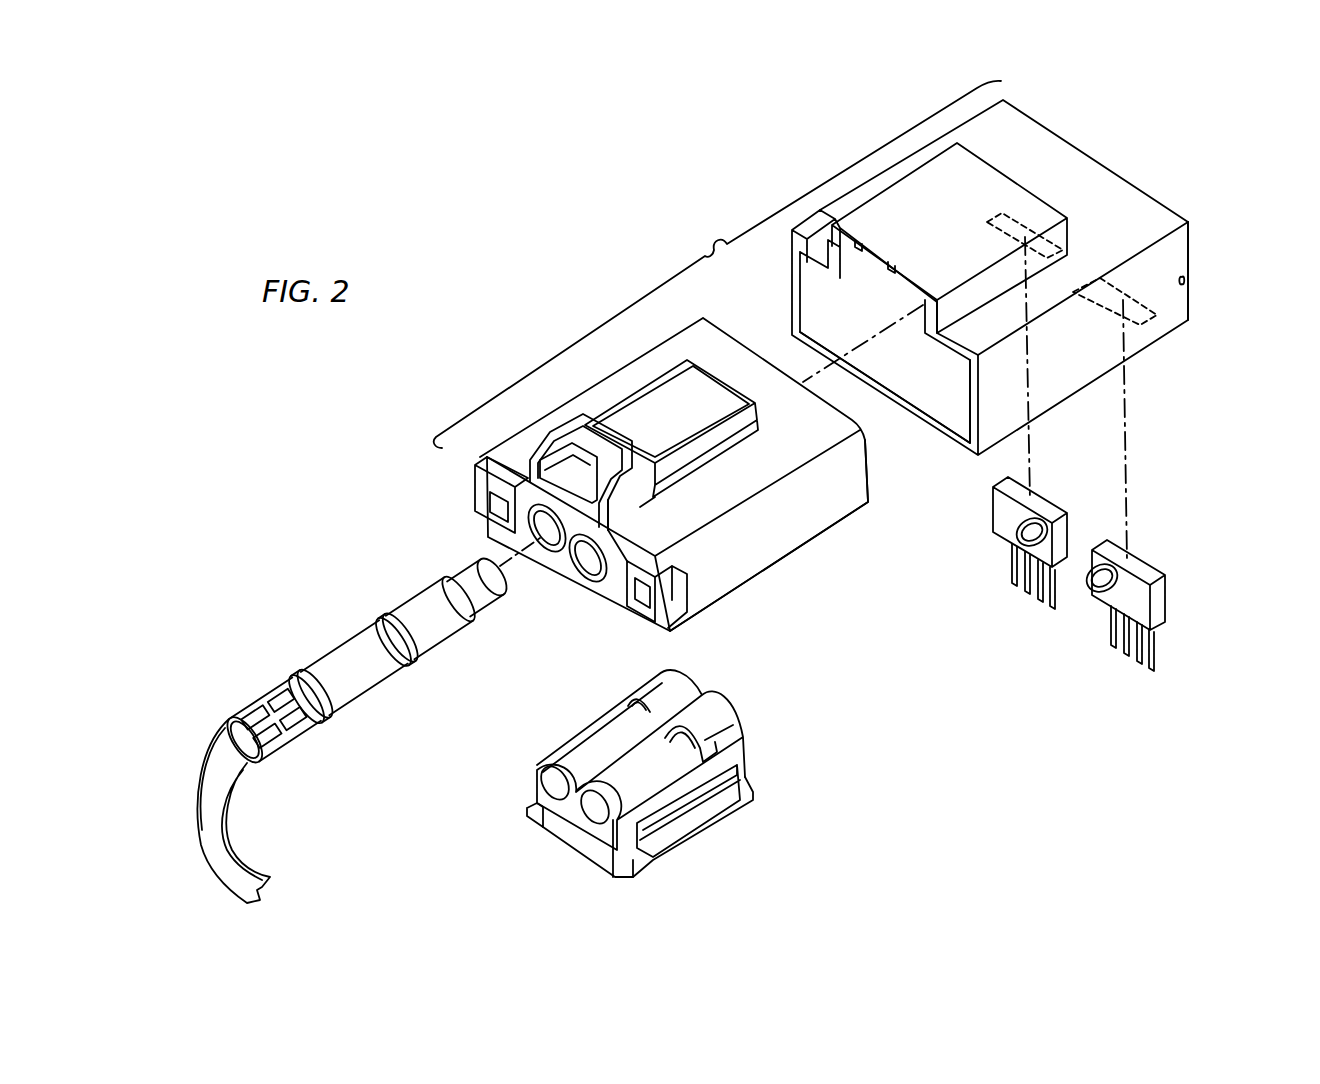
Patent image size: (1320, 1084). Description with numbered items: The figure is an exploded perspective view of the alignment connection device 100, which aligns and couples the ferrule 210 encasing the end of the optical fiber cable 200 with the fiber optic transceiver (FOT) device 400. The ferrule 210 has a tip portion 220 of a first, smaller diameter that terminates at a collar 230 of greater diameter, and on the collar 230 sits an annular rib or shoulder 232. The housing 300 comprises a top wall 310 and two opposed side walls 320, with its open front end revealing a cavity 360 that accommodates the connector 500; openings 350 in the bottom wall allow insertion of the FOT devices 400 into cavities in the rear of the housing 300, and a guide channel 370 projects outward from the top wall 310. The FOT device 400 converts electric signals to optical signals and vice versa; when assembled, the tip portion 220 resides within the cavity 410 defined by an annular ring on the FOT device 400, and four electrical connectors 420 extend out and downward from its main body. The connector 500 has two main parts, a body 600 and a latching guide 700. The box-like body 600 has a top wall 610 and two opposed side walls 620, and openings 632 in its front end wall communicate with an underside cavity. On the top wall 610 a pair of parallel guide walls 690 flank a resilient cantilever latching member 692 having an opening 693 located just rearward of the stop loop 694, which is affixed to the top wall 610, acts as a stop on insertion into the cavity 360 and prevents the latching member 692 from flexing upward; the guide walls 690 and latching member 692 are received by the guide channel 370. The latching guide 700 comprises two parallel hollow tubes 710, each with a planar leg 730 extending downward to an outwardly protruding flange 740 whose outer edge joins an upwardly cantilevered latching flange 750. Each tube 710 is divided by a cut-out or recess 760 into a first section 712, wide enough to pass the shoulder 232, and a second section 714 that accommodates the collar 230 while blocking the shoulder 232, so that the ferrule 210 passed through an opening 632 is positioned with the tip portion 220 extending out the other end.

The alignment connection device 100 is at (725, 244).
The optical fiber cable 200 is at (213, 785).
The ferrule 210 is at (329, 715).
The tip portion 220 is at (473, 573).
The collar 230 is at (420, 605).
The annular rib or shoulder 232 is at (425, 653).
The housing 300 is at (1000, 323).
The top wall 310 is at (1084, 170).
The side walls 320 is at (1172, 318).
The openings 350 is at (1142, 314).
The cavity 360 is at (856, 314).
The guide channel 370 is at (953, 203).
The fiber optic transceiver (FOT) device 400 is at (1129, 589).
The cavity 410 is at (1090, 588).
The electrical connectors 420 is at (1130, 657).
The connector 500 is at (890, 568).
The body 600 is at (652, 477).
The top wall 610 is at (770, 481).
The side walls 620 is at (848, 497).
The openings 632 is at (584, 567).
The guide walls 690 is at (687, 468).
The latching member 692 is at (547, 432).
The opening 693 is at (640, 437).
The stop loop 694 is at (640, 508).
The latching guide 700 is at (633, 777).
The tube 710 is at (652, 793).
The first section 712 is at (560, 789).
The second section 714 is at (627, 703).
The planar leg 730 is at (613, 868).
The outwardly protruding flange 740 is at (637, 868).
The latching flange 750 is at (730, 783).
The cut-out or recess 760 is at (682, 746).